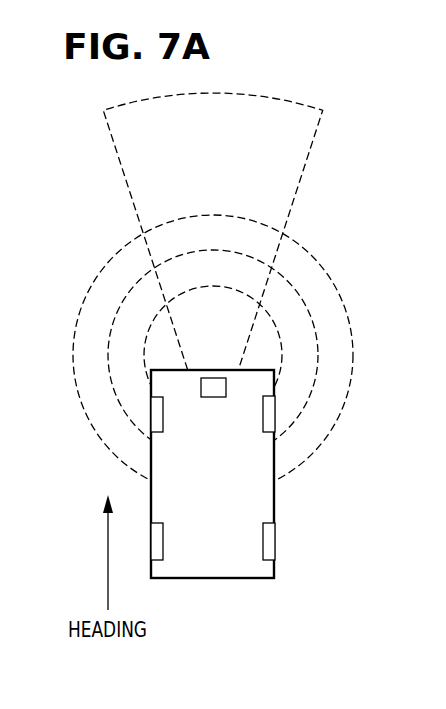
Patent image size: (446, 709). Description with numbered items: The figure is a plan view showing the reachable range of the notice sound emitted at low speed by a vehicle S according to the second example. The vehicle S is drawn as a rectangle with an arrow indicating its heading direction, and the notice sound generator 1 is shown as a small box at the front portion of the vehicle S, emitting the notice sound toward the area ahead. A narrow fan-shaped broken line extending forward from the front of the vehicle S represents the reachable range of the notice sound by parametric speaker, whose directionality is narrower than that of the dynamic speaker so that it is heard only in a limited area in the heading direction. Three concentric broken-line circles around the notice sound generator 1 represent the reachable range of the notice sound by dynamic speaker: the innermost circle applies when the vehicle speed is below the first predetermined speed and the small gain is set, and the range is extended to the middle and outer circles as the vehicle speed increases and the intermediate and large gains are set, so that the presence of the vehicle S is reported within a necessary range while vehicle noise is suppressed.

The notice sound generator 1 is at (218, 389).
The vehicle S is at (270, 502).